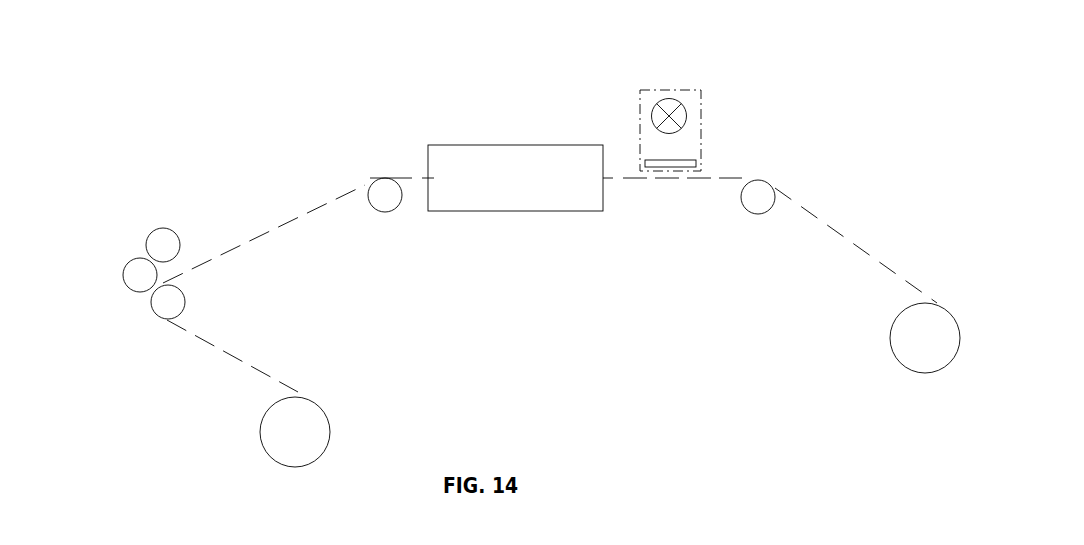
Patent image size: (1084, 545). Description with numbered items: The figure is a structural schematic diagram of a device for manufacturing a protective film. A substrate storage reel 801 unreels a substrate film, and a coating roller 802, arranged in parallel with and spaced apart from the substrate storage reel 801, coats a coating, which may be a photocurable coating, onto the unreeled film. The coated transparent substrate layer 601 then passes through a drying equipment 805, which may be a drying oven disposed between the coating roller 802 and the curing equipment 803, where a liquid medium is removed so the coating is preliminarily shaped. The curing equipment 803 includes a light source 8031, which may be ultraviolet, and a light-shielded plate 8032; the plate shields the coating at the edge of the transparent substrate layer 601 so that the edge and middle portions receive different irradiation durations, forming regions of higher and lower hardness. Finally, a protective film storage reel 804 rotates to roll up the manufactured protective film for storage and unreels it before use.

The transparent substrate layer 601 is at (228, 357).
The substrate storage reel 801 is at (313, 422).
The coating roller 802 is at (140, 273).
The curing equipment 803 is at (671, 111).
The light source 8031 is at (685, 113).
The light-shielded plate 8032 is at (693, 163).
The protective film storage reel 804 is at (893, 340).
The drying equipment 805 is at (433, 155).